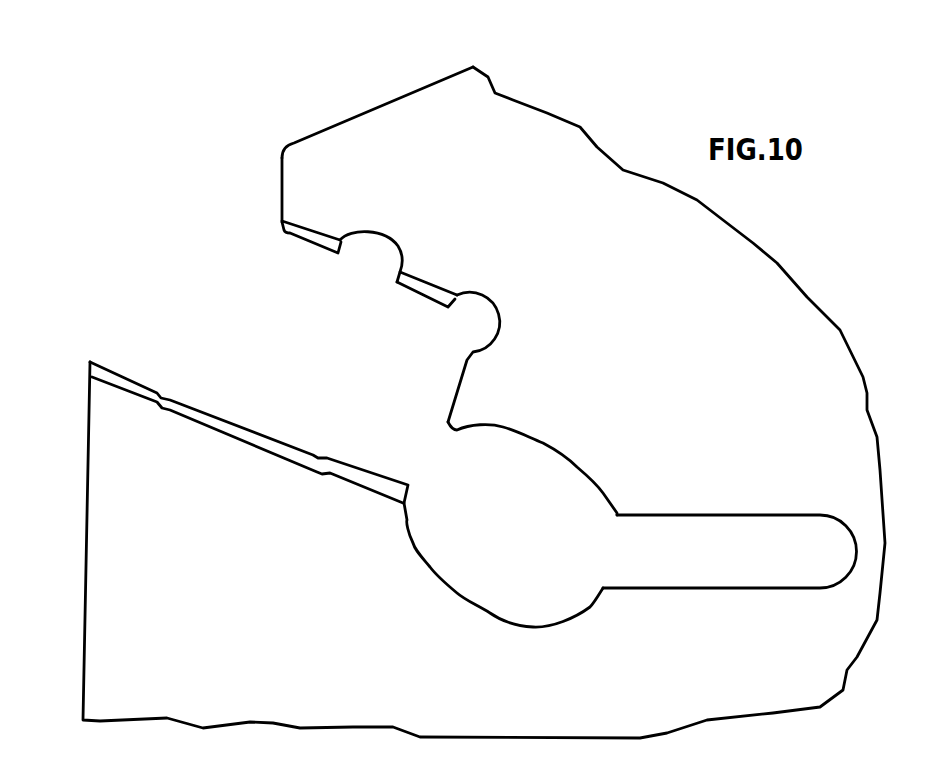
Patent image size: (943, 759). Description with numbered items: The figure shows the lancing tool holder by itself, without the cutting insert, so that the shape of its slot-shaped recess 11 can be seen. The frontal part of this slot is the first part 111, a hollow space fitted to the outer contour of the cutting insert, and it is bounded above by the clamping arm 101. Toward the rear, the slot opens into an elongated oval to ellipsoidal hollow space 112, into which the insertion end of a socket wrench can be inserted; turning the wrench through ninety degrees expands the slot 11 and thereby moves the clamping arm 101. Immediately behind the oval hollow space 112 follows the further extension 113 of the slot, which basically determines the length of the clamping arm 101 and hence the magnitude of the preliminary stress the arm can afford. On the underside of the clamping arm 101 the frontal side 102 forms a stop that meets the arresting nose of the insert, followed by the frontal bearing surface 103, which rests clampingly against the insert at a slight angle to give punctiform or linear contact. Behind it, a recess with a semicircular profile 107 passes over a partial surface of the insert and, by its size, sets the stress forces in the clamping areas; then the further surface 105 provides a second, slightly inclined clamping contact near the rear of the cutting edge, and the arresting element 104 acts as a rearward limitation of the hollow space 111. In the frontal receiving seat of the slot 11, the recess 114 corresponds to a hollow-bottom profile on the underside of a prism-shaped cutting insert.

The slot-shaped recess 11 is at (95, 257).
The clamping arm 101 is at (340, 148).
The frontal side of the clamping arm 102 is at (280, 190).
The frontal bearing surface 103 is at (302, 238).
The arresting element 104 is at (460, 393).
The further surface 105 is at (418, 287).
The semicircular profile 107 is at (387, 240).
The first part of the recess 111 is at (398, 418).
The oval to ellipsoidal hollow space 112 is at (512, 553).
The further extension of the slot 113 is at (777, 567).
The recess of the holder 114 is at (217, 420).